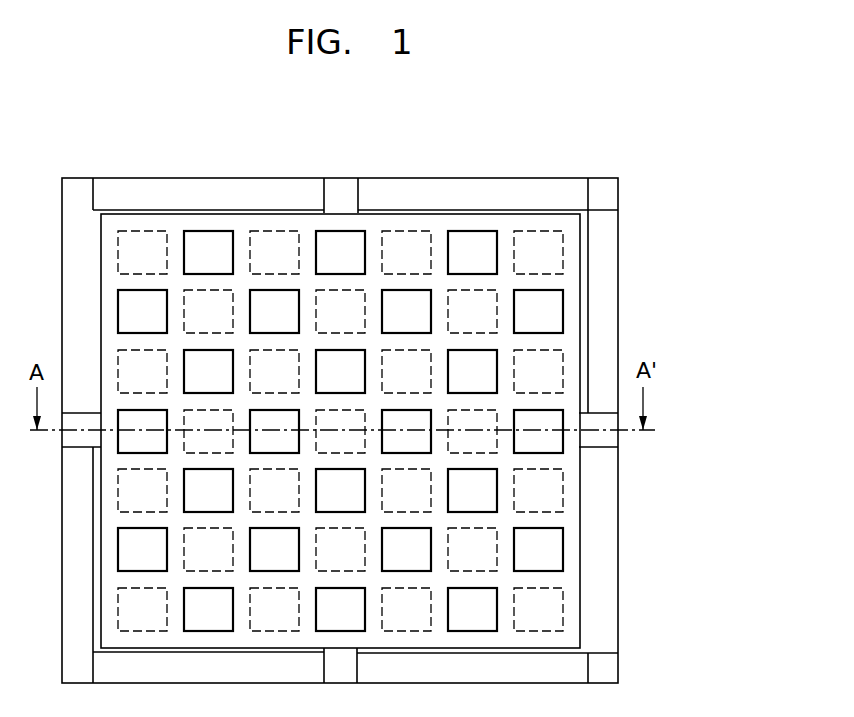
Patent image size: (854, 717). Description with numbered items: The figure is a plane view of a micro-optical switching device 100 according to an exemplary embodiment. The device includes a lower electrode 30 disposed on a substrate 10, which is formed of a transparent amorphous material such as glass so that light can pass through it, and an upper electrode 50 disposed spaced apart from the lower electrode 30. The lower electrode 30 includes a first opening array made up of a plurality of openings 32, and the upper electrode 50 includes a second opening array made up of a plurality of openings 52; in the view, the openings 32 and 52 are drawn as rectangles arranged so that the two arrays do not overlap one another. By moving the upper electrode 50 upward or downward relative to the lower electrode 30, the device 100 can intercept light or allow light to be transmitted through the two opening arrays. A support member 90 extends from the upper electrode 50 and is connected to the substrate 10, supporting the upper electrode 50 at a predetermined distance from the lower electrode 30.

The micro-optical switching device 100 is at (713, 159).
The substrate 10 is at (615, 549).
The support member 90 is at (610, 351).
The openings 32 is at (556, 491).
The upper electrode 50 is at (572, 252).
The lower electrode 30 is at (340, 431).
The openings 52 is at (555, 312).